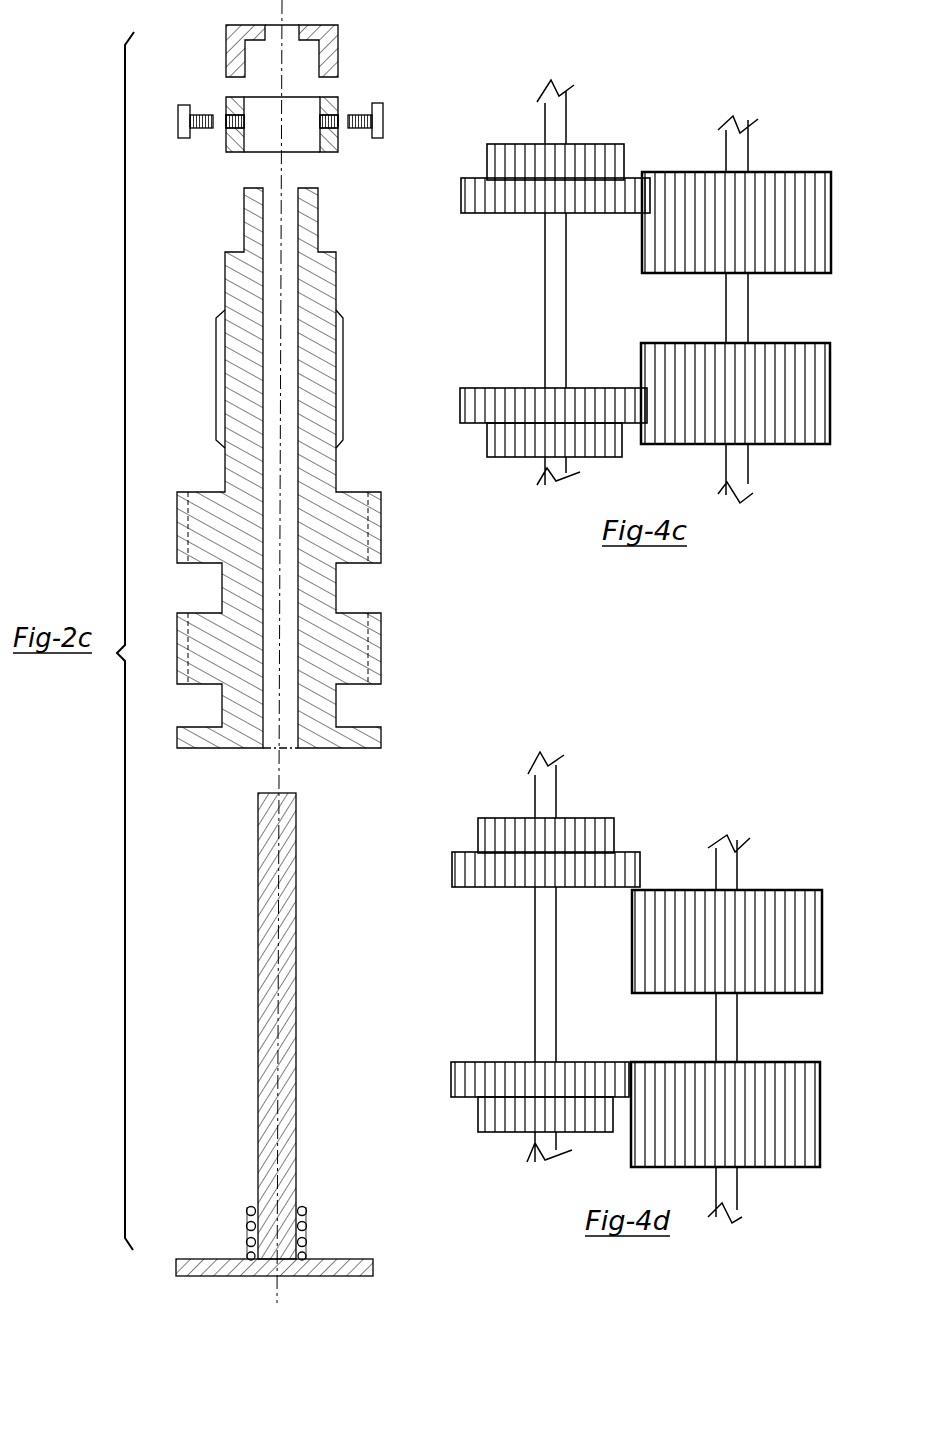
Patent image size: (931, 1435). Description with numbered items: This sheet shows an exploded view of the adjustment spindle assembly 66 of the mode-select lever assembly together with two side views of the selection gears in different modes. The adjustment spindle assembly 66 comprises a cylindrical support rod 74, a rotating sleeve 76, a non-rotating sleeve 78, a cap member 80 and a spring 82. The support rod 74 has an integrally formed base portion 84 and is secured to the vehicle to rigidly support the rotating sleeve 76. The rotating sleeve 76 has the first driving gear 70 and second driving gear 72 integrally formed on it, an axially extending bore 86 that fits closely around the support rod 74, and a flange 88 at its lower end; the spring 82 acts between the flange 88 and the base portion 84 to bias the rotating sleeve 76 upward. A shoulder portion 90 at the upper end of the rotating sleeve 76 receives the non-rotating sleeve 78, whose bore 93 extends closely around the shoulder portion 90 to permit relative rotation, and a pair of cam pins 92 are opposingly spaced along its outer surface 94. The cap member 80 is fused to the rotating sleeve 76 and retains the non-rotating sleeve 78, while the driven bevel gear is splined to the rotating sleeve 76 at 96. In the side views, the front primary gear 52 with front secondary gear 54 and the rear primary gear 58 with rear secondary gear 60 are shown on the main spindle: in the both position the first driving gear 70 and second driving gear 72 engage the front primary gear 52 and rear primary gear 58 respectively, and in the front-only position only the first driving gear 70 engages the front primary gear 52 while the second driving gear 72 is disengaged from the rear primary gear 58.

In FIG. 4C, the front primary gear 52 is at (473, 402).
In FIG. 4D, the front primary gear 52 is at (463, 1075).
In FIG. 4C, the front secondary gear 54 is at (497, 443).
In FIG. 4D, the front secondary gear 54 is at (485, 1117).
In FIG. 4C, the rear primary gear 58 is at (497, 203).
In FIG. 4D, the rear primary gear 58 is at (487, 877).
In FIG. 4C, the rear secondary gear 60 is at (506, 155).
In FIG. 4D, the rear secondary gear 60 is at (495, 828).
In FIG. 2C, the adjustment spindle assembly 66 is at (85, 326).
In FIG. 2C, the first driving gear 70 is at (381, 639).
In FIG. 4C, the first driving gear 70 is at (800, 435).
In FIG. 4D, the first driving gear 70 is at (790, 1077).
In FIG. 2C, the second driving gear 72 is at (381, 529).
In FIG. 4C, the second driving gear 72 is at (793, 187).
In FIG. 4D, the second driving gear 72 is at (780, 893).
In FIG. 2C, the support rod 74 is at (296, 1011).
In FIG. 2C, the rotating sleeve 76 is at (337, 282).
In FIG. 2C, the non-rotating sleeve 78 is at (338, 103).
In FIG. 2C, the cap member 80 is at (338, 28).
In FIG. 2C, the spring 82 is at (300, 1208).
In FIG. 2C, the base portion 84 is at (350, 1262).
In FIG. 2C, the bore 86 is at (295, 747).
In FIG. 2C, the flange 88 is at (355, 748).
In FIG. 2C, the shoulder portion 90 is at (318, 218).
In FIG. 2C, the cam pins 92 is at (178, 117).
In FIG. 2C, the bore 93 is at (317, 140).
In FIG. 2C, the outer surface 94 is at (231, 140).
In FIG. 2C, the spline 96 is at (343, 364).